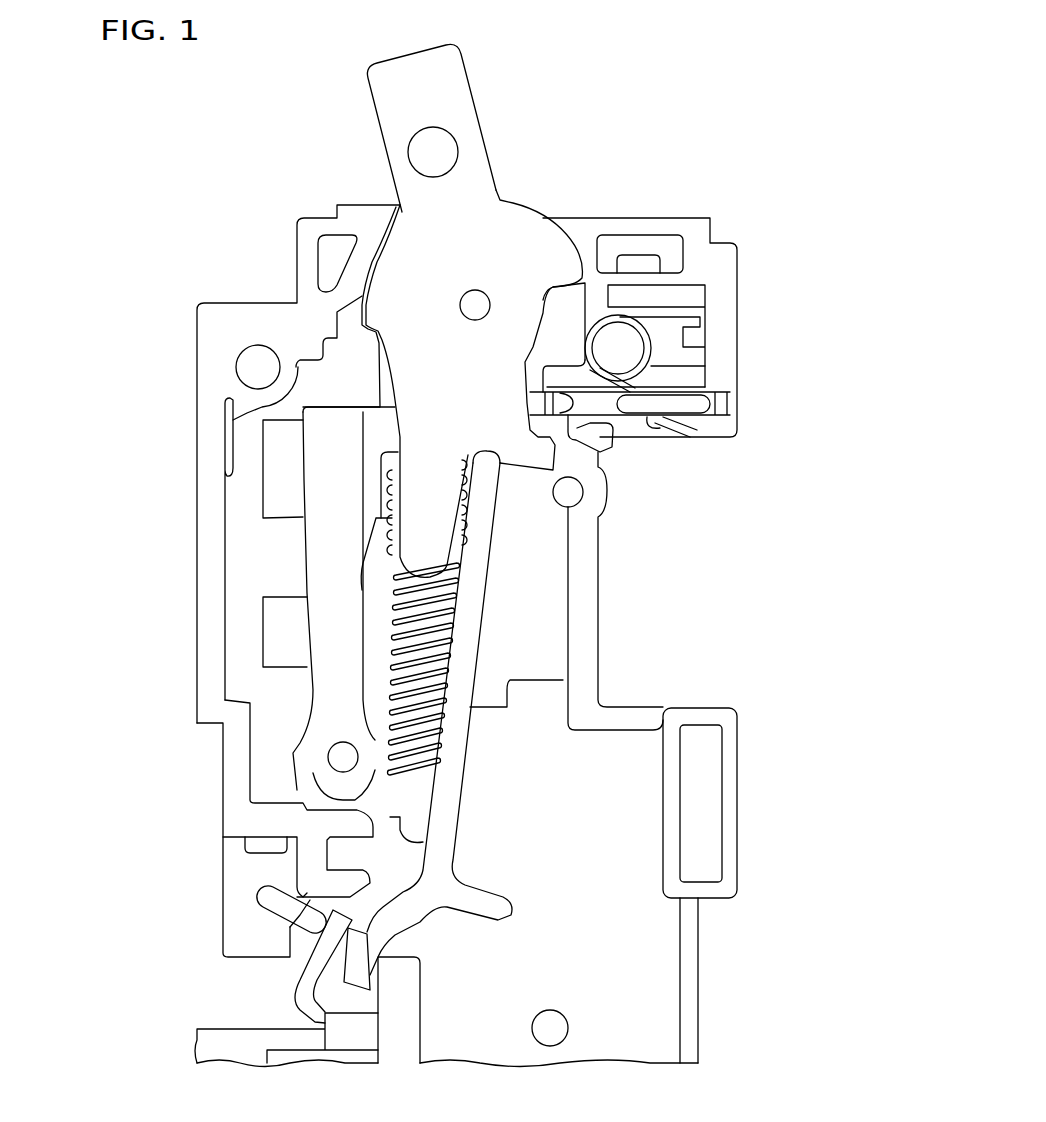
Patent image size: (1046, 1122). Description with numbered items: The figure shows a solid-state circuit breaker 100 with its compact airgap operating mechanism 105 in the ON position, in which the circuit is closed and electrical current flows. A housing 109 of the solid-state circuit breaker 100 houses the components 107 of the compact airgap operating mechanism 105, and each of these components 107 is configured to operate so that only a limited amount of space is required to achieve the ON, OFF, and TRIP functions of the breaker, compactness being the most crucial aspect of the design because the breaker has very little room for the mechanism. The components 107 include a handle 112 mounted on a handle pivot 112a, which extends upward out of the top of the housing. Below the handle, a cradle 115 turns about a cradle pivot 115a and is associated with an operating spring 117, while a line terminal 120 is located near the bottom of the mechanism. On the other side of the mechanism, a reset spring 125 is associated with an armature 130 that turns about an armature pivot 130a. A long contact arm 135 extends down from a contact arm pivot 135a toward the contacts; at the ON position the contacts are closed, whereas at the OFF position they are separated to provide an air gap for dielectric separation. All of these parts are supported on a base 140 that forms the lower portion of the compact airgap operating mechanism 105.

The solid-state circuit breaker 100 is at (690, 62).
The compact airgap operating mechanism 105 is at (633, 203).
The components 107 is at (503, 571).
The housing 109 is at (246, 292).
The handle 112 is at (470, 80).
The handle pivot 112a is at (467, 290).
The cradle 115 is at (303, 478).
The cradle pivot 115a is at (343, 757).
The operating spring 117 is at (392, 573).
The line terminal 120 is at (292, 990).
The reset spring 125 is at (653, 350).
The armature 130 is at (698, 407).
The armature pivot 130a is at (565, 405).
The contact arm 135 is at (483, 622).
The contact arm pivot 135a is at (490, 450).
The base 140 is at (600, 828).